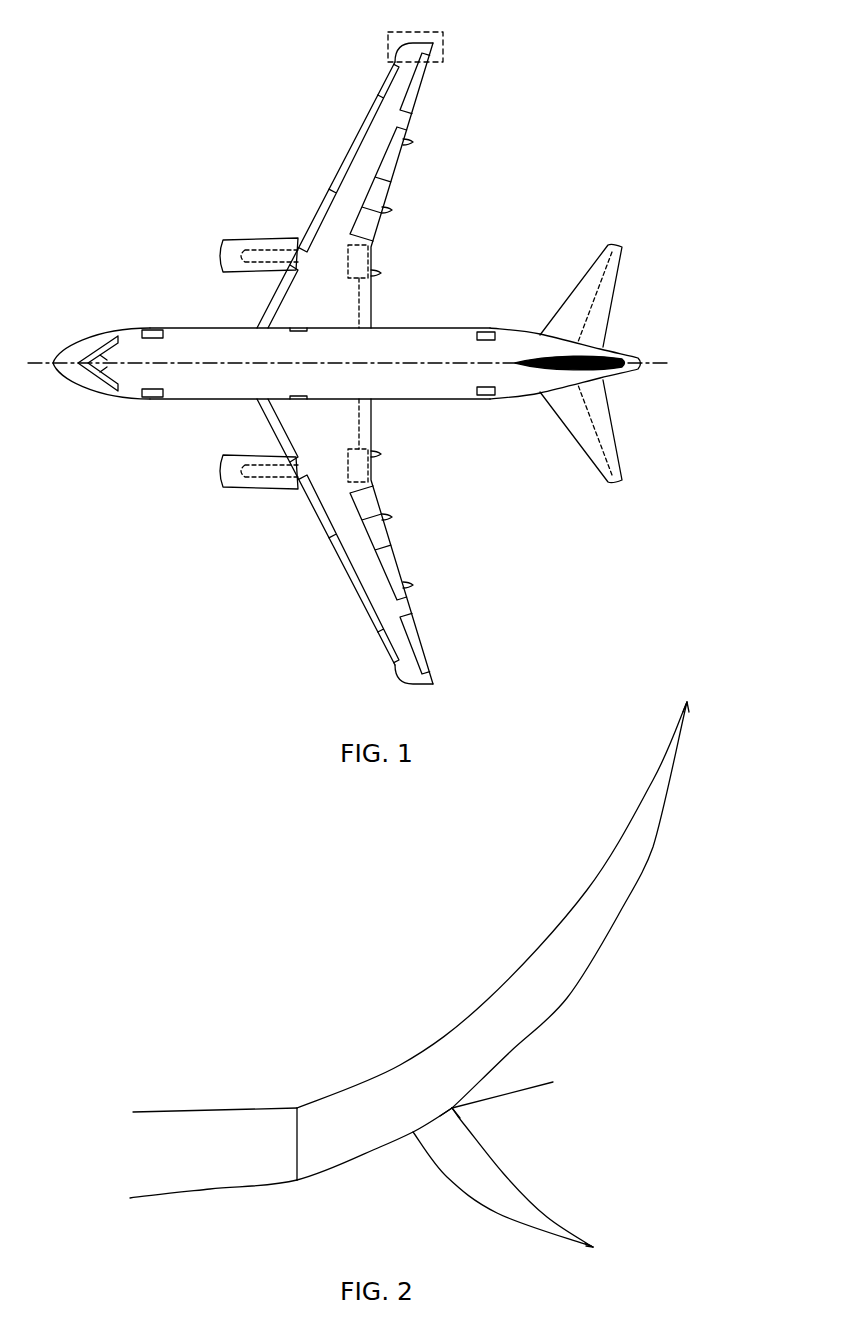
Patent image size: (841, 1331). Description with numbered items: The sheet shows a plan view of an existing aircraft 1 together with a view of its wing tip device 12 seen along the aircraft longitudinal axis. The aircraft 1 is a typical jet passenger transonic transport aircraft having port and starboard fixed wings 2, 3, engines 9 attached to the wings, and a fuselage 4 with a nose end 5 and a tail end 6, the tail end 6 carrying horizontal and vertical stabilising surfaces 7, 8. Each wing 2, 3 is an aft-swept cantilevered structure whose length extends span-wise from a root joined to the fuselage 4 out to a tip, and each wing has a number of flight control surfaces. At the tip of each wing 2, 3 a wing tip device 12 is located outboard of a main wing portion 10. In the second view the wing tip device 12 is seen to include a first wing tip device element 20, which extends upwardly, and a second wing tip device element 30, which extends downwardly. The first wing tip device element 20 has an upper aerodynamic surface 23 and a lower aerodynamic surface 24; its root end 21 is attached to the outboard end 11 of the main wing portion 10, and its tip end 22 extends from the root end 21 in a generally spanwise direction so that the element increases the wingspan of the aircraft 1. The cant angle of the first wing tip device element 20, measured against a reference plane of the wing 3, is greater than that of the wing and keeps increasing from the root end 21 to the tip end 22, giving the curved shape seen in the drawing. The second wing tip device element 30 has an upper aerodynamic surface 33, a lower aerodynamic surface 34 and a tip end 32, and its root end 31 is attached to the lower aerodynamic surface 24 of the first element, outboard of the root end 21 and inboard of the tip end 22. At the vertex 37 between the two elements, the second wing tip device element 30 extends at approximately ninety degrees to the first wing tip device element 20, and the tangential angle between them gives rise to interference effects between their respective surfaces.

In FIG. 1, the aircraft 1 is at (545, 141).
In FIG. 1, the port fixed wing 2 is at (333, 497).
In FIG. 1, the starboard fixed wing 3 is at (345, 190).
In FIG. 1, the fuselage 4 is at (195, 350).
In FIG. 1, the nose end 5 is at (53, 367).
In FIG. 1, the tail end 6 is at (640, 355).
In FIG. 1, the horizontal stabilising surfaces 7 is at (590, 280).
In FIG. 1, the vertical stabilising surface 8 is at (538, 368).
In FIG. 1, the engines 9 is at (233, 247).
In FIG. 1, the main wing portion 10 is at (385, 97).
In FIG. 2, the main wing portion 10 is at (183, 1173).
In FIG. 2, the outboard end 11 is at (297, 1163).
In FIG. 1, the wing tip device 12 is at (443, 40).
In FIG. 2, the wing tip device 12 is at (264, 916).
In FIG. 2, the first wing tip device element 20 is at (478, 1032).
In FIG. 2, the root end 21 is at (300, 1150).
In FIG. 2, the tip end 22 is at (687, 702).
In FIG. 2, the upper aerodynamic surface 23 is at (588, 892).
In FIG. 2, the lower aerodynamic surface 24 is at (592, 970).
In FIG. 2, the second wing tip device element 30 is at (502, 1197).
In FIG. 2, the root end 31 is at (437, 1118).
In FIG. 2, the tip end 32 is at (595, 1248).
In FIG. 2, the upper aerodynamic surface 33 is at (503, 1173).
In FIG. 2, the lower aerodynamic surface 34 is at (450, 1178).
In FIG. 2, the vertex 37 is at (519, 1089).